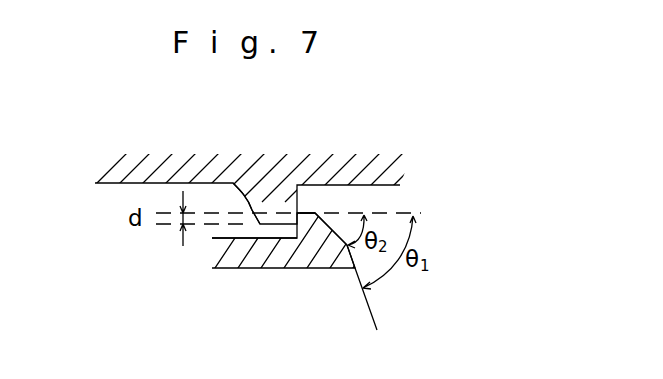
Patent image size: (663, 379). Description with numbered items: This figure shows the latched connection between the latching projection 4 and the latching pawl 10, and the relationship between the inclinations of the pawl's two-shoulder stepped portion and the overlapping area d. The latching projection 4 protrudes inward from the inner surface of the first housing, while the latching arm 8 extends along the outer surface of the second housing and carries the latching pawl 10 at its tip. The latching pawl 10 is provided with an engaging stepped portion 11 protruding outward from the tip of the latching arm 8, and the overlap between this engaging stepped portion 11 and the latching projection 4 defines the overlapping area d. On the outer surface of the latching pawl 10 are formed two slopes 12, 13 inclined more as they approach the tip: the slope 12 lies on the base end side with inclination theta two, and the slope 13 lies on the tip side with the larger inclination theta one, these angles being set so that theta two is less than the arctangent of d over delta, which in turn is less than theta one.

The latching projection 4 is at (235, 181).
The latching arm 8 is at (228, 264).
The latching pawl 10 is at (318, 236).
The engaging stepped portion 11 is at (291, 240).
The slope 12 is at (338, 214).
The slope 13 is at (356, 270).